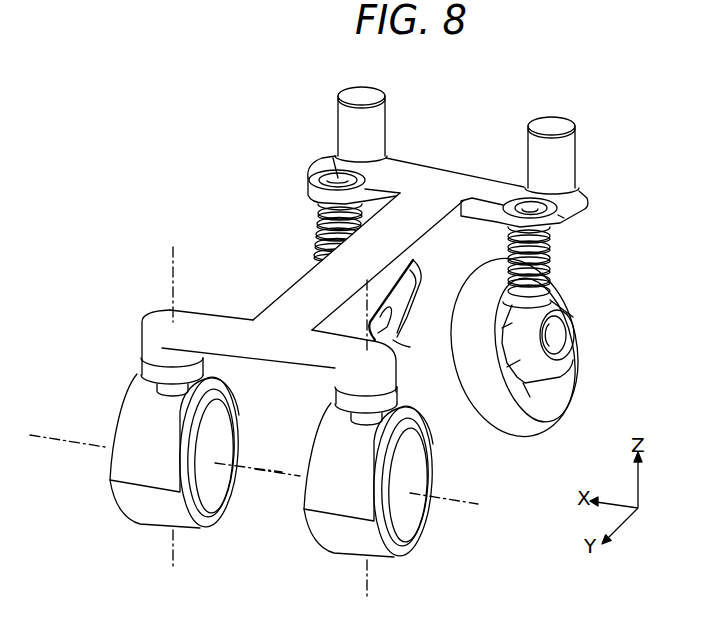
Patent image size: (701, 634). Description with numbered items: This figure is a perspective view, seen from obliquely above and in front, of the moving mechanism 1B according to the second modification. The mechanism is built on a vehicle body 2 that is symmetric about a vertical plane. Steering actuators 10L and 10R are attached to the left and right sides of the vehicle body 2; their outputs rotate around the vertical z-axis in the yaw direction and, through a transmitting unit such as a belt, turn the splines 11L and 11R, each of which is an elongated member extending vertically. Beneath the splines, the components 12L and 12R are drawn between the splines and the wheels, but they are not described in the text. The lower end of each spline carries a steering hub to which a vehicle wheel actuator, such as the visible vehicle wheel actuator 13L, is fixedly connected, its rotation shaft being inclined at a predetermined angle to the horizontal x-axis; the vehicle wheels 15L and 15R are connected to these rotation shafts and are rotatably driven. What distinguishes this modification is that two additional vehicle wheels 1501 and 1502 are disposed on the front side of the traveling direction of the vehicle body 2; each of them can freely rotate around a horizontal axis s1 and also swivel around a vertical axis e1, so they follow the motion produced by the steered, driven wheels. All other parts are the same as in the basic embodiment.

The moving mechanism 1B is at (181, 163).
The vehicle body 2 is at (450, 173).
The steering actuator 10R is at (338, 128).
The steering actuator 10L is at (577, 160).
The spline 11R is at (330, 156).
The spline 11L is at (566, 218).
The right spring 12R is at (322, 237).
The left spring 12L is at (552, 262).
The vehicle wheel actuator 13L is at (564, 336).
The vehicle wheel 15L is at (568, 403).
The vehicle wheel 15R is at (421, 336).
The vehicle wheel 1501 is at (147, 510).
The vehicle wheel 1502 is at (343, 532).
The vertical axis e1 is at (173, 280).
The horizontal axis s1 is at (103, 445).